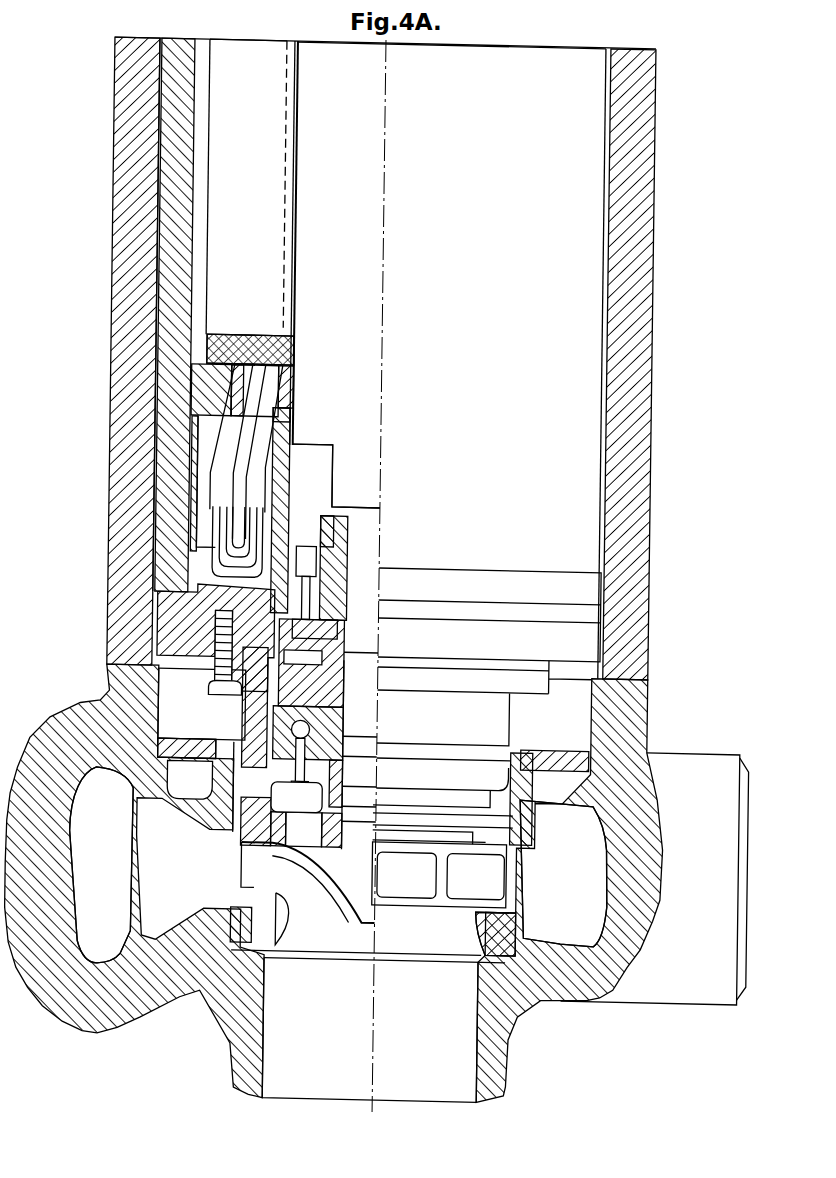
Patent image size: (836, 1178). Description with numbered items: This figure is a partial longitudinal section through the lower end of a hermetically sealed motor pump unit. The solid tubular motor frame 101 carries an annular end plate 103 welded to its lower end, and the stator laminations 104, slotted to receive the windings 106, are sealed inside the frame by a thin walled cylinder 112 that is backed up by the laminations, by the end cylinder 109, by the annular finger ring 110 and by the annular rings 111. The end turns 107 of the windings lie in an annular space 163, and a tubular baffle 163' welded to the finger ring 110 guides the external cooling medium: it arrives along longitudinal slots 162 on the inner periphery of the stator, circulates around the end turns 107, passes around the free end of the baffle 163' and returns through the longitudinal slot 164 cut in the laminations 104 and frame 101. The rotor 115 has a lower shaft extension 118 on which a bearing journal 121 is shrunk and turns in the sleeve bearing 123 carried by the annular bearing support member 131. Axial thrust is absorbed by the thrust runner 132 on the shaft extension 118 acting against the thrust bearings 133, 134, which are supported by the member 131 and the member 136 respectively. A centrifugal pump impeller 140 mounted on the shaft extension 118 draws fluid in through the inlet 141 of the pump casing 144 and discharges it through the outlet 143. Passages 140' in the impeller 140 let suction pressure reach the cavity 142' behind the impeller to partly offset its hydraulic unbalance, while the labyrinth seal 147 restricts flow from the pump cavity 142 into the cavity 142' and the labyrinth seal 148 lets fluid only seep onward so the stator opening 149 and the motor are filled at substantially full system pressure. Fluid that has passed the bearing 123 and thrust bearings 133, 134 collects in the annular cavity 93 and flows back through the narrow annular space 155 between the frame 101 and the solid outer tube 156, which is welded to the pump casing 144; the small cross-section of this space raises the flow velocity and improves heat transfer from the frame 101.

The longitudinal slot 164 is at (204, 157).
The thin walled cylinder 112 is at (289, 222).
The longitudinal slots 162 is at (297, 250).
The stator laminations 104 is at (268, 292).
The stator opening 149 is at (292, 325).
The rotor 115 is at (360, 328).
The annular finger ring 110 is at (190, 387).
The windings 106 is at (284, 382).
The annular rings 111 is at (284, 395).
The end turns 107 is at (291, 418).
The tubular baffle 163' is at (131, 483).
The annular space 163 is at (271, 513).
The end cylinder 109 is at (284, 492).
The motor frame 101 is at (148, 497).
The sleeve bearing 123 is at (336, 530).
The shaft extension 118 is at (362, 548).
The bearing journal 121 is at (340, 578).
The bearing support member 131 is at (335, 618).
The thrust bearing 133 is at (345, 635).
The thrust runner 132 is at (343, 668).
The annular space 155 is at (178, 603).
The annular end plate 103 is at (172, 620).
The thrust bearing 134 is at (331, 720).
The annular cavity 93 is at (184, 727).
The support member 136 is at (343, 783).
The labyrinth seal 148 is at (338, 790).
The cavity 142' is at (334, 822).
The labyrinth seal 147 is at (276, 815).
The passages 140' is at (307, 894).
The pump cavity 142 is at (338, 870).
The pump impeller 140 is at (439, 882).
The pump casing 144 is at (648, 737).
The outer tube 156 is at (645, 527).
The outlet 143 is at (737, 969).
The inlet 141 is at (428, 1100).